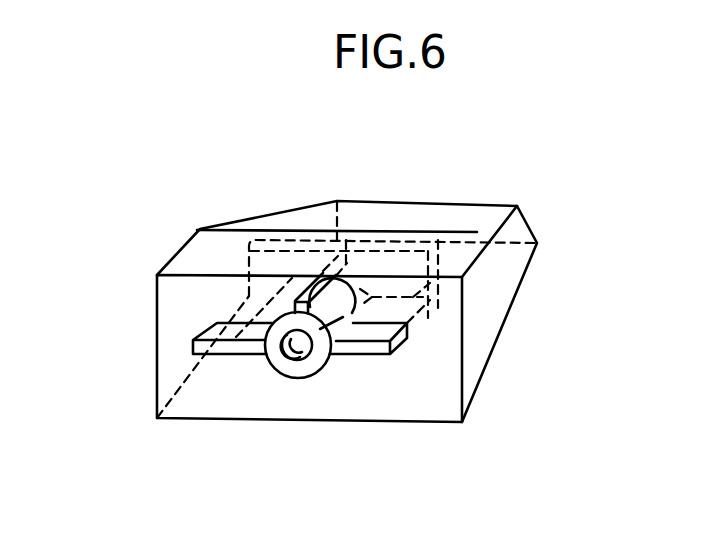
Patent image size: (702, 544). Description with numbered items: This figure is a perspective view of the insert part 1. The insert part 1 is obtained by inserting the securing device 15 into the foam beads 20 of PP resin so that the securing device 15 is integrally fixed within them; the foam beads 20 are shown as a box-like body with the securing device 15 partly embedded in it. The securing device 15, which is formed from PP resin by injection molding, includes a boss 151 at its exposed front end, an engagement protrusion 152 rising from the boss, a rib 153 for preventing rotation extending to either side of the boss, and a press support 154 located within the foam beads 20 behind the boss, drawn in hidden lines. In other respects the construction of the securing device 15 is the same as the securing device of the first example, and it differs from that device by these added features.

The insert part 1 is at (532, 196).
The foam beads 20 is at (437, 378).
The securing device 15 is at (321, 319).
The boss 151 is at (295, 371).
The engagement protrusion 152 is at (293, 307).
The rib for preventing rotation 153 is at (222, 326).
The press support 154 is at (377, 263).